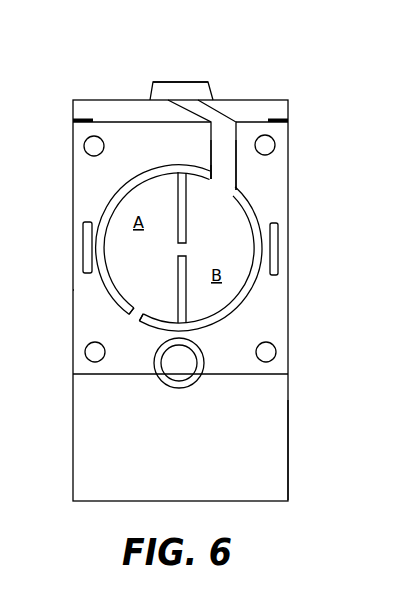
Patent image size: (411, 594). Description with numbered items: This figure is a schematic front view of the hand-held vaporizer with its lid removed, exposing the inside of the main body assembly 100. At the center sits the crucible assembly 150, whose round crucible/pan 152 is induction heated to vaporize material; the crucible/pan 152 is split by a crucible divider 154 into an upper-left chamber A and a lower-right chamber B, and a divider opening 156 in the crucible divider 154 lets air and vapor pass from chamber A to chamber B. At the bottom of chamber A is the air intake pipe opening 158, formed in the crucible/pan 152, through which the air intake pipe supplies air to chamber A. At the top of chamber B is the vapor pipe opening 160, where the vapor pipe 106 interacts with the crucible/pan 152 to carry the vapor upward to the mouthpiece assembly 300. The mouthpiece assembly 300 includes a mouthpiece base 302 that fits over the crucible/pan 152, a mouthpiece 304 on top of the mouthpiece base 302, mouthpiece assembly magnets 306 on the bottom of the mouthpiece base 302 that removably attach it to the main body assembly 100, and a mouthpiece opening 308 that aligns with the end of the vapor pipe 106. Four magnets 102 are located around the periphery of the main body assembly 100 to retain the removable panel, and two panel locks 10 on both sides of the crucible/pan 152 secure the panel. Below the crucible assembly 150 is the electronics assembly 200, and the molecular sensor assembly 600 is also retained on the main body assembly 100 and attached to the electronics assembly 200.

The panel lock 10 is at (83, 228).
The main body assembly 100 is at (319, 294).
The magnets 102 is at (89, 146).
The vapor pipe 106 is at (238, 157).
The crucible assembly 150 is at (70, 291).
The crucible/pan 152 is at (238, 307).
The crucible divider 154 is at (179, 197).
The divider opening 156 is at (179, 248).
The air intake pipe opening 158 is at (138, 313).
The vapor pipe opening 160 is at (218, 183).
The electronics assembly 200 is at (179, 393).
The mouthpiece assembly 300 is at (177, 80).
The mouthpiece base 302 is at (288, 105).
The mouthpiece 304 is at (153, 99).
The mouthpiece assembly magnets 306 is at (288, 122).
The mouthpiece opening 308 is at (226, 112).
The molecular sensor assembly 600 is at (295, 437).